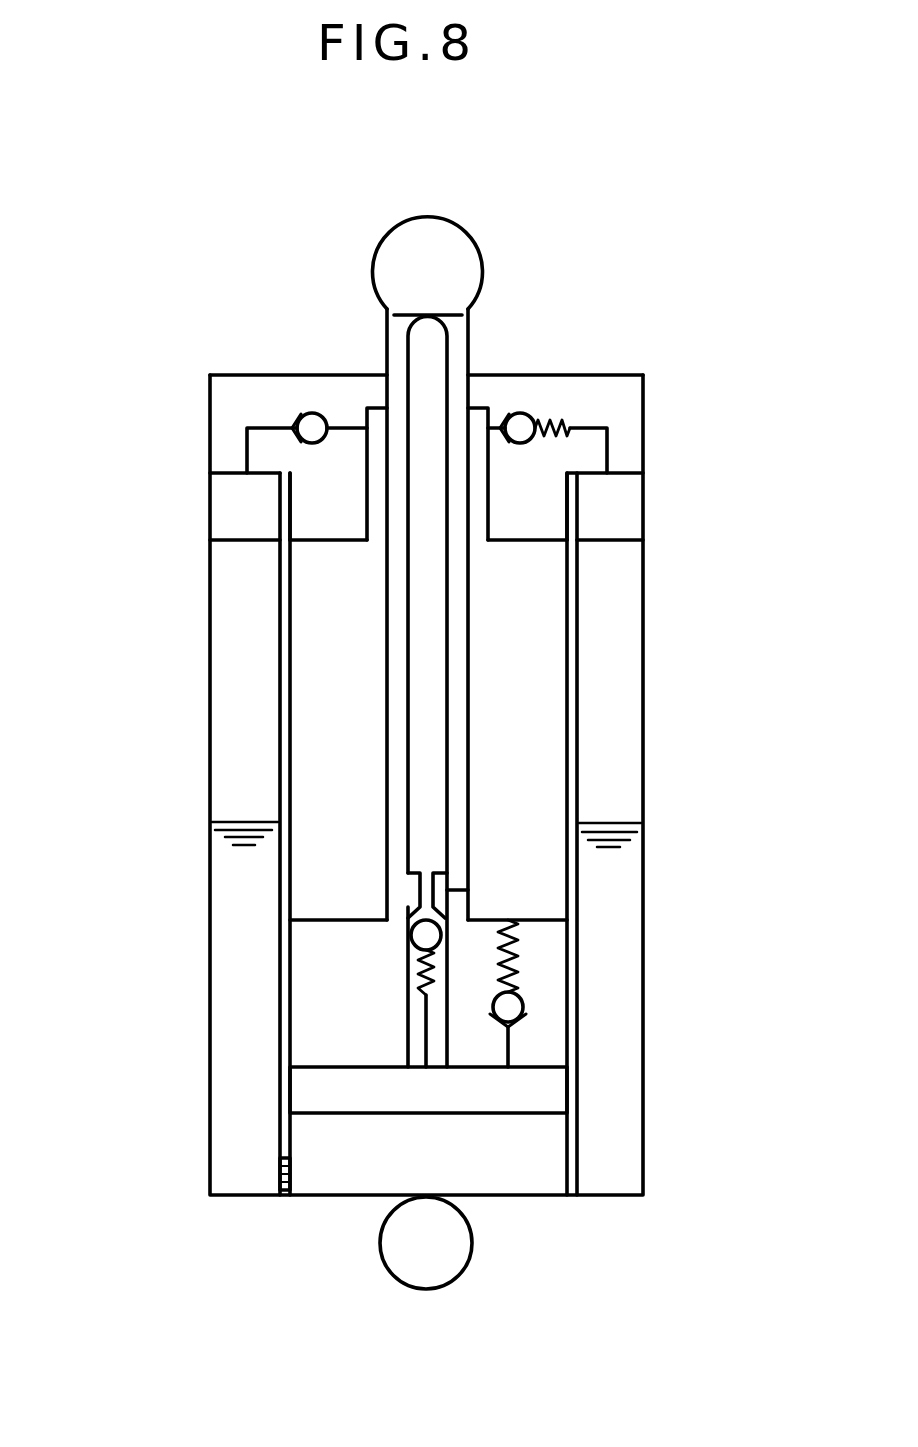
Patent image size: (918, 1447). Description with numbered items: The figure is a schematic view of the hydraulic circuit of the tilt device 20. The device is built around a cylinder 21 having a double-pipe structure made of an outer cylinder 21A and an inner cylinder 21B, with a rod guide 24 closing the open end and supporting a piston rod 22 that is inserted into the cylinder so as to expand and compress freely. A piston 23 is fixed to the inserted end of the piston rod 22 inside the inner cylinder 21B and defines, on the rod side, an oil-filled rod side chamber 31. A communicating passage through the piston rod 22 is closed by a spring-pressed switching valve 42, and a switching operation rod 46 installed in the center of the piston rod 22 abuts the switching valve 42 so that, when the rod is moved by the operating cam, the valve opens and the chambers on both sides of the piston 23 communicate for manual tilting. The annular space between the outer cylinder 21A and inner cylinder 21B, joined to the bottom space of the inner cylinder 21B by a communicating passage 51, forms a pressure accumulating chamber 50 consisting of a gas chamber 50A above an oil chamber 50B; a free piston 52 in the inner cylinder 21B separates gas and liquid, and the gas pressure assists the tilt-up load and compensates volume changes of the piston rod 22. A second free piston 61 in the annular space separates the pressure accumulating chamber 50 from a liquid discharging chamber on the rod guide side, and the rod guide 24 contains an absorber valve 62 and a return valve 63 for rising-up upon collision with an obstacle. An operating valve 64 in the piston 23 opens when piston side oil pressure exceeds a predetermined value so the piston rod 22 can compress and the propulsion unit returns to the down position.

The tilt device 20 is at (115, 300).
The cylinder 21 is at (207, 710).
The outer cylinder 21A is at (210, 785).
The inner cylinder 21B is at (280, 802).
The piston rod 22 is at (448, 250).
The piston 23 is at (312, 1023).
The rod guide 24 is at (630, 408).
The rod side chamber 31 is at (530, 745).
The switching valve 42 is at (405, 933).
The switching operation rod 46 is at (433, 657).
The pressure accumulating chamber 50 is at (250, 637).
The gas chamber 50A is at (232, 572).
The oil chamber 50B is at (232, 922).
The communicating passage 51 is at (273, 1172).
The free piston 52 is at (302, 1088).
The free piston 61 is at (620, 507).
The absorber valve 62 is at (518, 413).
The return valve 63 is at (312, 413).
The operating valve 64 is at (515, 1007).